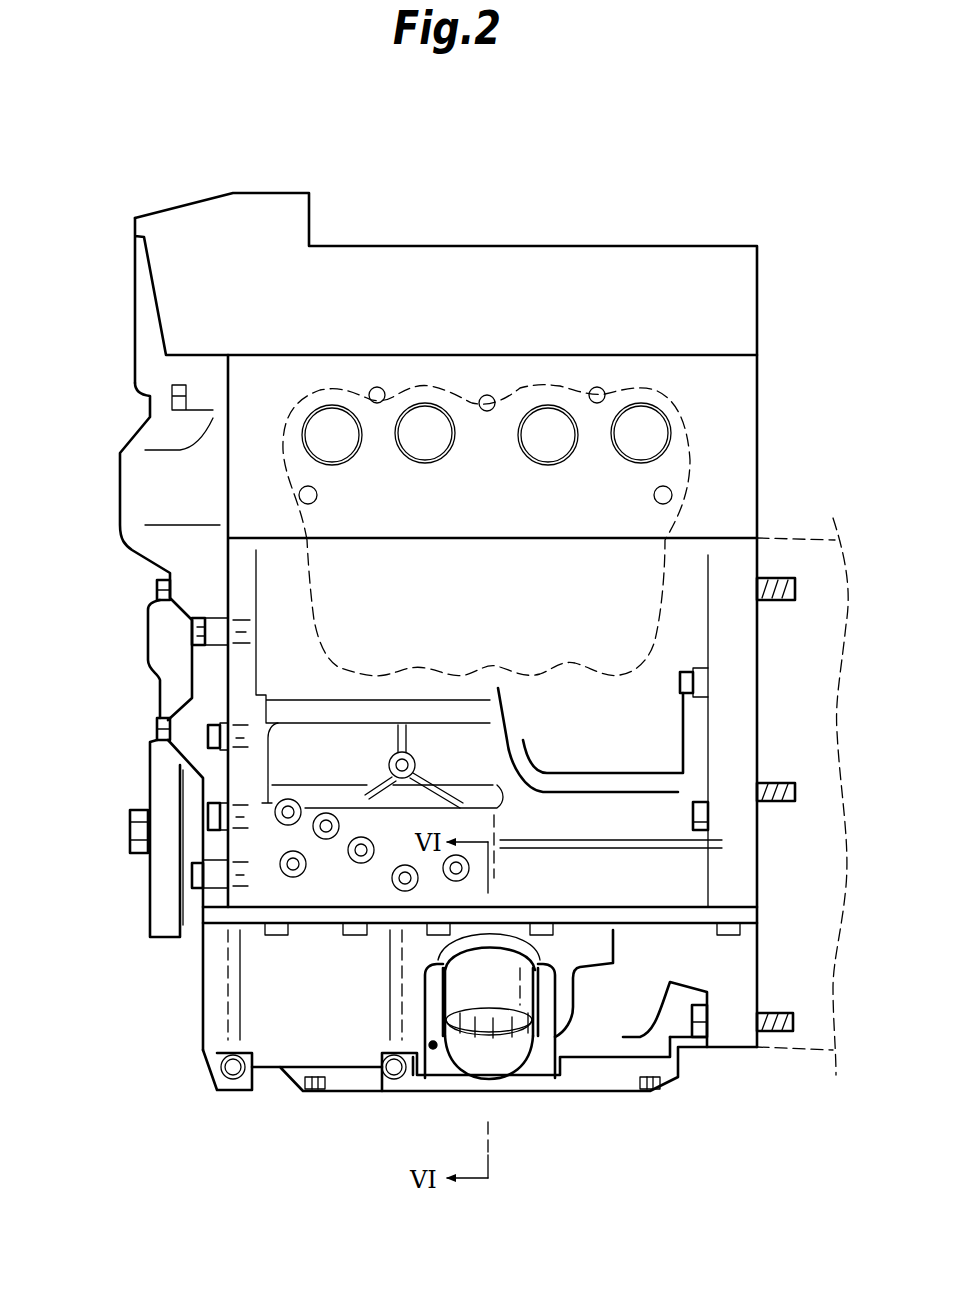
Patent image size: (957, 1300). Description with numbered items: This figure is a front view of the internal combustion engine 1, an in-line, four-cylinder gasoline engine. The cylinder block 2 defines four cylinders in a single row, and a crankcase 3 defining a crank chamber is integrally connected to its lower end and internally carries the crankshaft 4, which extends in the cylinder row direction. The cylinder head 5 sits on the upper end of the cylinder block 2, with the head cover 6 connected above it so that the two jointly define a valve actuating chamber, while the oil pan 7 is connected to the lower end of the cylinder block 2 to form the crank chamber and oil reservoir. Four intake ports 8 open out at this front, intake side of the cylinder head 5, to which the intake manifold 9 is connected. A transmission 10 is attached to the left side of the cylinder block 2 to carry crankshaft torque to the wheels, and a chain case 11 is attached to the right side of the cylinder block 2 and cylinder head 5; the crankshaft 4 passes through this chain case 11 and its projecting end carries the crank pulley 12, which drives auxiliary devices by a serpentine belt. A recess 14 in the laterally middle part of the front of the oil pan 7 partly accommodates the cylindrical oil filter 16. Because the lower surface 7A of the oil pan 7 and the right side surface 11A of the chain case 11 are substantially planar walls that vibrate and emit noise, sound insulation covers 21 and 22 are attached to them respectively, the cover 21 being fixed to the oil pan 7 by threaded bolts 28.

The internal combustion engine 1 is at (703, 158).
The cylinder block 2 is at (658, 668).
The crankcase 3 is at (645, 812).
The crankshaft 4 is at (128, 833).
The cylinder head 5 is at (740, 422).
The head cover 6 is at (514, 262).
The oil pan 7 is at (213, 1015).
The lower surface of the oil pan 7A is at (265, 1075).
The intake ports 8 is at (423, 458).
The intake manifold 9 is at (672, 520).
The transmission 10 is at (785, 537).
The chain case 11 is at (135, 490).
The right side surface of the chain case 11A is at (190, 667).
The crank pulley 12 is at (157, 915).
The recess 14 is at (433, 1050).
The oil filter 16 is at (513, 1060).
The sound insulation cover 21 is at (595, 1083).
The sound insulation cover 22 is at (162, 633).
The threaded bolts 28 is at (155, 590).